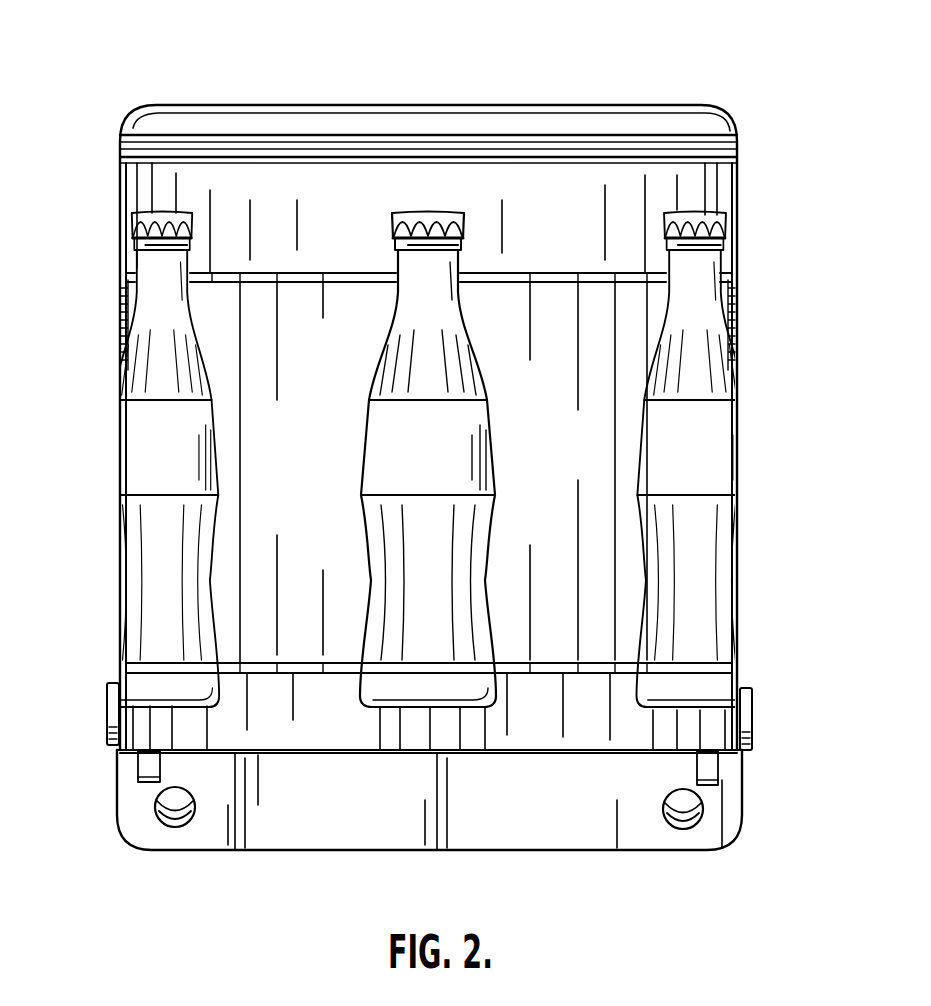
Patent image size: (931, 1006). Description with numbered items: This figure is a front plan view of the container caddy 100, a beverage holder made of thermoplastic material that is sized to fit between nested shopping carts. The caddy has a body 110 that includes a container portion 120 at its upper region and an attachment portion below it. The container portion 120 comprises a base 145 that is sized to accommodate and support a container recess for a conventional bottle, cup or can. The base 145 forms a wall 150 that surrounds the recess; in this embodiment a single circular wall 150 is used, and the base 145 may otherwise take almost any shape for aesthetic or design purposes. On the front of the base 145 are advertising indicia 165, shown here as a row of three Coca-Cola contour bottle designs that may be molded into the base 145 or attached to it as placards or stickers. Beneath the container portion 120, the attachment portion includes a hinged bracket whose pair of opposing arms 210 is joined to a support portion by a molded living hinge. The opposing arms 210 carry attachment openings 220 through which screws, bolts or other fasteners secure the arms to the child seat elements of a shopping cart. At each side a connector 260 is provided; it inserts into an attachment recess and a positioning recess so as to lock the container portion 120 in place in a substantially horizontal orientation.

The container caddy 100 is at (170, 93).
The body 110 is at (745, 153).
The container portion 120 is at (102, 192).
The base 145 is at (707, 190).
The wall 150 is at (157, 192).
The advertising indicia 165 is at (218, 458).
The opposing arms 210 is at (730, 812).
The attachment openings 220 is at (176, 828).
The connector 260 is at (107, 712).